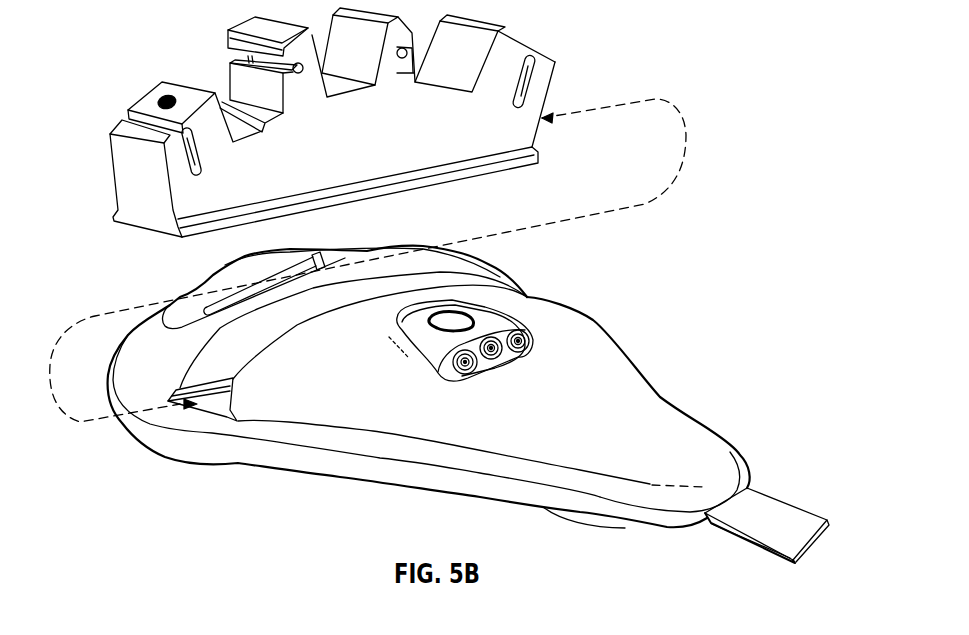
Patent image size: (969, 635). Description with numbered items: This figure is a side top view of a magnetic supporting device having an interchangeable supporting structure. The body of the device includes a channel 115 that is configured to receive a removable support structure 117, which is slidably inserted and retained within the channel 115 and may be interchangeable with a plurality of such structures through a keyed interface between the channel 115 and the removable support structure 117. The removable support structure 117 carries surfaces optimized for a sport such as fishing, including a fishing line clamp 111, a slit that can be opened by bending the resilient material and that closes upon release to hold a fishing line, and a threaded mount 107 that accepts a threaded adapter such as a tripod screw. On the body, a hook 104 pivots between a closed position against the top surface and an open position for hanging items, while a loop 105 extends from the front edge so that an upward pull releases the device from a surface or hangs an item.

The hook 104 is at (323, 267).
The loop 105 is at (788, 510).
The threaded mount 107 is at (162, 97).
The fishing line clamp 111 is at (402, 77).
The channel 115 is at (195, 408).
The removable support structure 117 is at (534, 37).